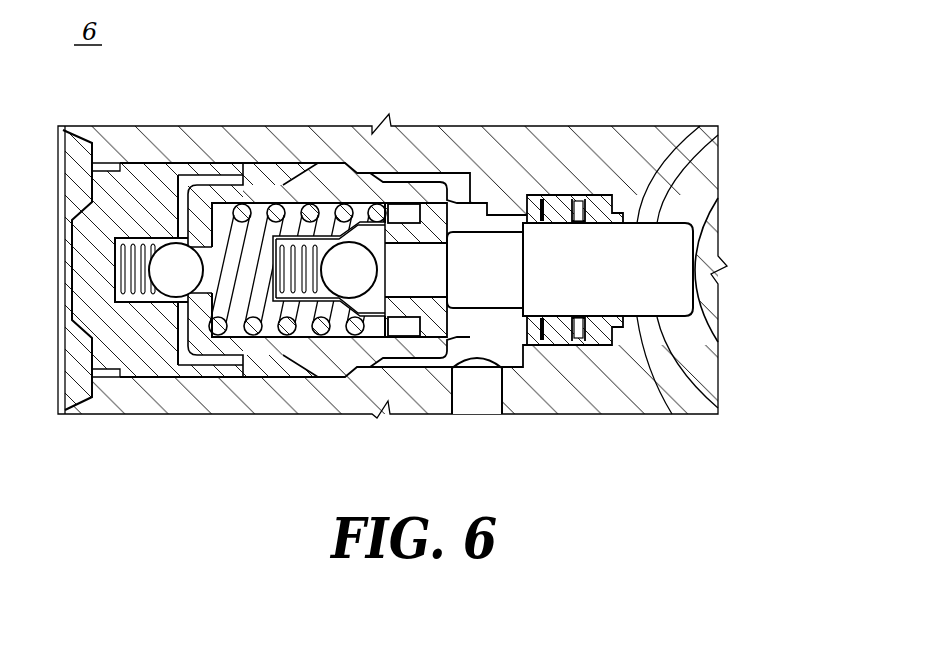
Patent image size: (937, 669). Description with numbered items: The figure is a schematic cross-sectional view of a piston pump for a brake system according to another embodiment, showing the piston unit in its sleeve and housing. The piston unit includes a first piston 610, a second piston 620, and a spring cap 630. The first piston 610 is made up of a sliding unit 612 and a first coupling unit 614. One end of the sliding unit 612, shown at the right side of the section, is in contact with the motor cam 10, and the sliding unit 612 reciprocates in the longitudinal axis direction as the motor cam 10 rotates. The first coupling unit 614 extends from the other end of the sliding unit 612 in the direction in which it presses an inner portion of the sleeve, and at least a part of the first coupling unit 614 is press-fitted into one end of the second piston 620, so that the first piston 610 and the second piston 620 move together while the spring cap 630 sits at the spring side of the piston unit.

The motor cam 10 is at (718, 237).
The first piston 610 is at (648, 328).
The sliding unit 612 is at (628, 226).
The first coupling unit 614 is at (507, 243).
The second piston 620 is at (428, 214).
The spring cap 630 is at (337, 326).